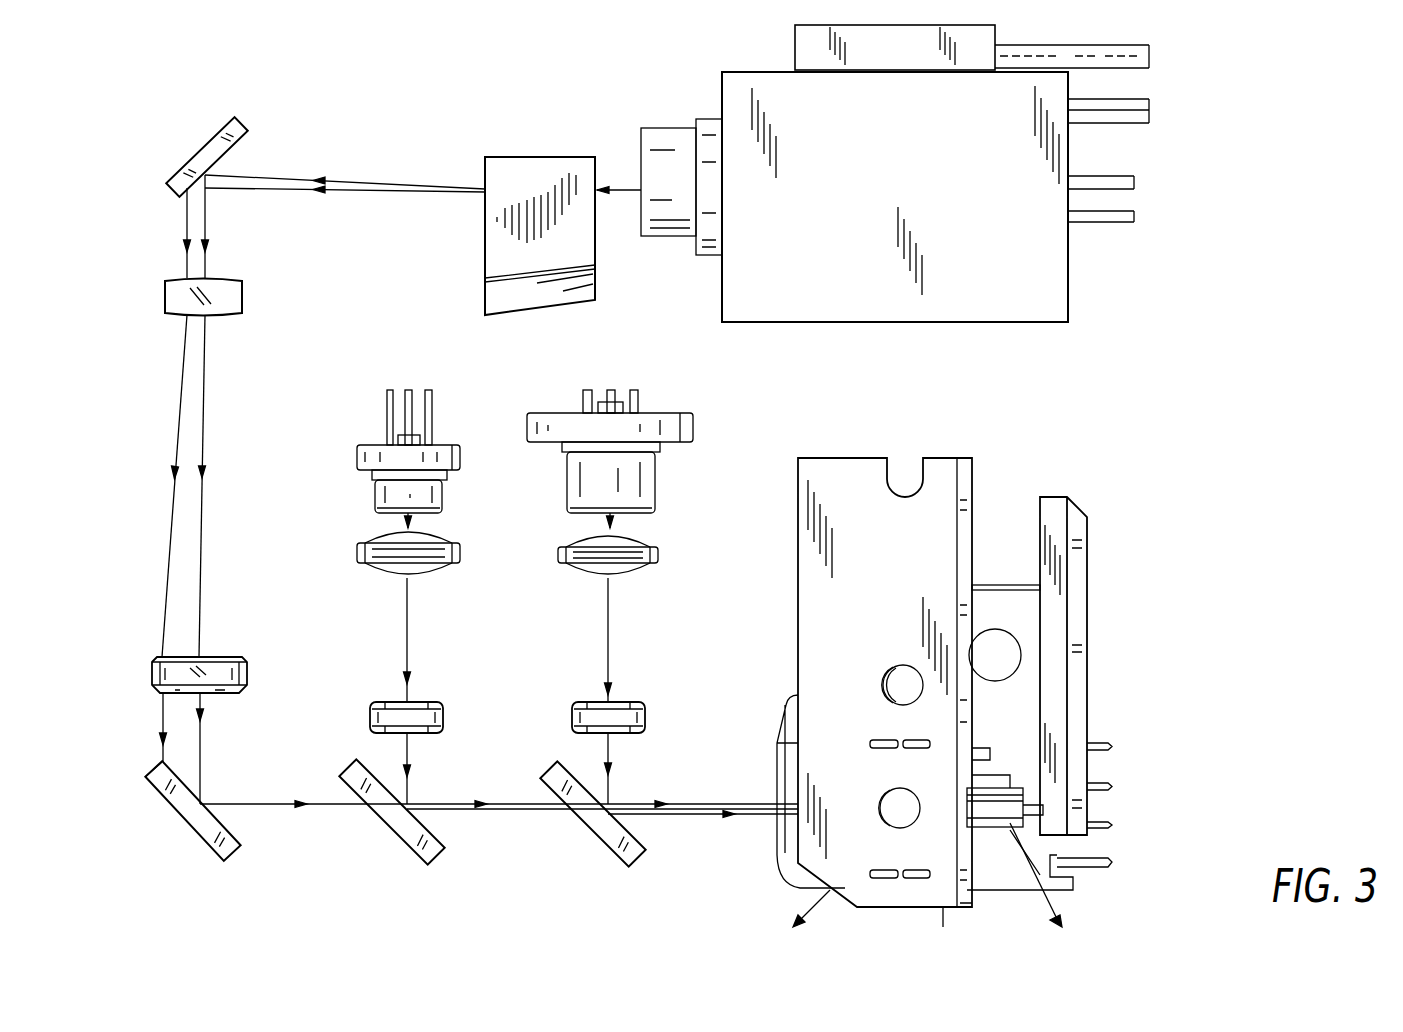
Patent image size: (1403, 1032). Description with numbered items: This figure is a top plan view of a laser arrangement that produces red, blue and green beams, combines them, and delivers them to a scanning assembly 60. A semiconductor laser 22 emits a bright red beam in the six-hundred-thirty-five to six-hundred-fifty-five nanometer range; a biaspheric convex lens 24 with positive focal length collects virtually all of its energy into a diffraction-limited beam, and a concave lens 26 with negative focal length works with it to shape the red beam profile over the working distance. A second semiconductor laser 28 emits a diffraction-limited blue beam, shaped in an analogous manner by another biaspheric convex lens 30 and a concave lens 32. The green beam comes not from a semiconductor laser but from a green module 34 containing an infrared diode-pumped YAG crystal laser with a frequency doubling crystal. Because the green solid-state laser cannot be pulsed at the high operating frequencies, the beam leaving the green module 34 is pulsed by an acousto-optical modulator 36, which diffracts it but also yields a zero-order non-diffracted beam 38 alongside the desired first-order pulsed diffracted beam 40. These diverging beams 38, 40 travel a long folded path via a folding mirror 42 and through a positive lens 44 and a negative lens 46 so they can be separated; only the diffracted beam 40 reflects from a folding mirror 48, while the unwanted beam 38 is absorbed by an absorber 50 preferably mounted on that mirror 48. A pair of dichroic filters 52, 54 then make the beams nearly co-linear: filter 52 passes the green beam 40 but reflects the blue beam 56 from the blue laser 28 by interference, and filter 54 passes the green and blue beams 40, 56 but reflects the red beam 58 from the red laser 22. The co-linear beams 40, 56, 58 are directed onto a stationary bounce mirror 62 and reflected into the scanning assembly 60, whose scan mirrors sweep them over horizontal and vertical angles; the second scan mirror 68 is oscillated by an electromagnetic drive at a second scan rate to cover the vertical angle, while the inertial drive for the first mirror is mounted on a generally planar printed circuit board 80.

The semiconductor laser 22 is at (655, 485).
The biaspheric convex lens 24 is at (658, 553).
The concave lens 26 is at (645, 718).
The semiconductor laser 28 is at (442, 493).
The biaspheric convex lens 30 is at (457, 547).
The concave lens 32 is at (443, 718).
The green module 34 is at (778, 322).
The acousto-optical modulator 36 is at (525, 309).
The zero-order non-diffracted beam 38 is at (255, 193).
The first-order pulsed diffracted beam 40 is at (275, 175).
The folding mirror 42 is at (218, 123).
The positive lens 44 is at (242, 300).
The negative lens 46 is at (247, 670).
The folding mirror 48 is at (233, 838).
The absorber 50 is at (155, 782).
The dichroic filter 52 is at (440, 843).
The dichroic filter 54 is at (640, 843).
The blue beam 56 is at (408, 757).
The red beam 58 is at (610, 752).
The scanning assembly 60 is at (961, 674).
The stationary bounce mirror 62 is at (1082, 568).
The second scan mirror 68 is at (1005, 823).
The printed circuit board 80 is at (833, 477).